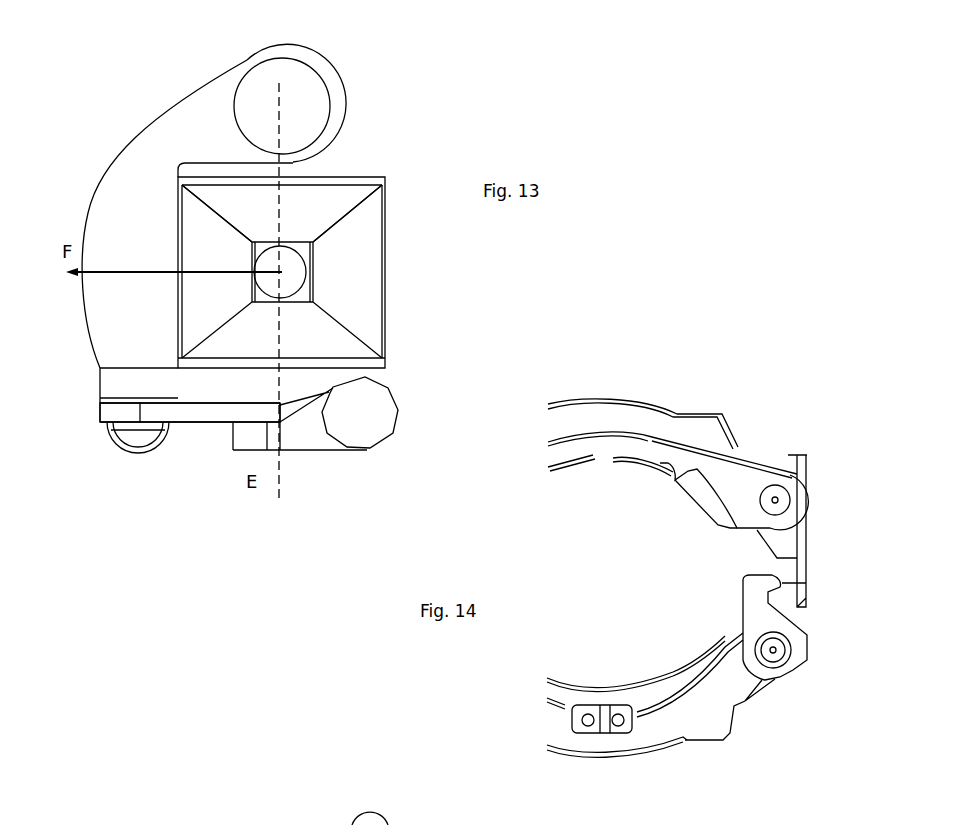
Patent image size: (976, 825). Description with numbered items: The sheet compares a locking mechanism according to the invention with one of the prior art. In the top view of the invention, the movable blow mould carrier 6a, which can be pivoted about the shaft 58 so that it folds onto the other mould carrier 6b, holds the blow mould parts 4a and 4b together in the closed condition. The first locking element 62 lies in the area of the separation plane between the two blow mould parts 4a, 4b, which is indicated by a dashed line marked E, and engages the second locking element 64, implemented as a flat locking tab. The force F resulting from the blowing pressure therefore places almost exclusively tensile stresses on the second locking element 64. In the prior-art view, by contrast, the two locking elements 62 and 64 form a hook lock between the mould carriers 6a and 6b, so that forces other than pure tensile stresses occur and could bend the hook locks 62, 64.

In FIG. 13, the shaft 58 is at (272, 107).
In FIG. 13, the blow mould part 4a is at (232, 212).
In FIG. 13, the blow mould part 4b is at (335, 220).
In FIG. 13, the movable blow mould carrier 6a is at (123, 223).
In FIG. 14, the movable blow mould carrier 6a is at (660, 720).
In FIG. 14, the mould carrier 6b is at (675, 430).
In FIG. 13, the first locking element 62 is at (310, 422).
In FIG. 14, the first locking element 62 is at (793, 550).
In FIG. 13, the second locking element 64 is at (187, 413).
In FIG. 14, the second locking element 64 is at (762, 627).